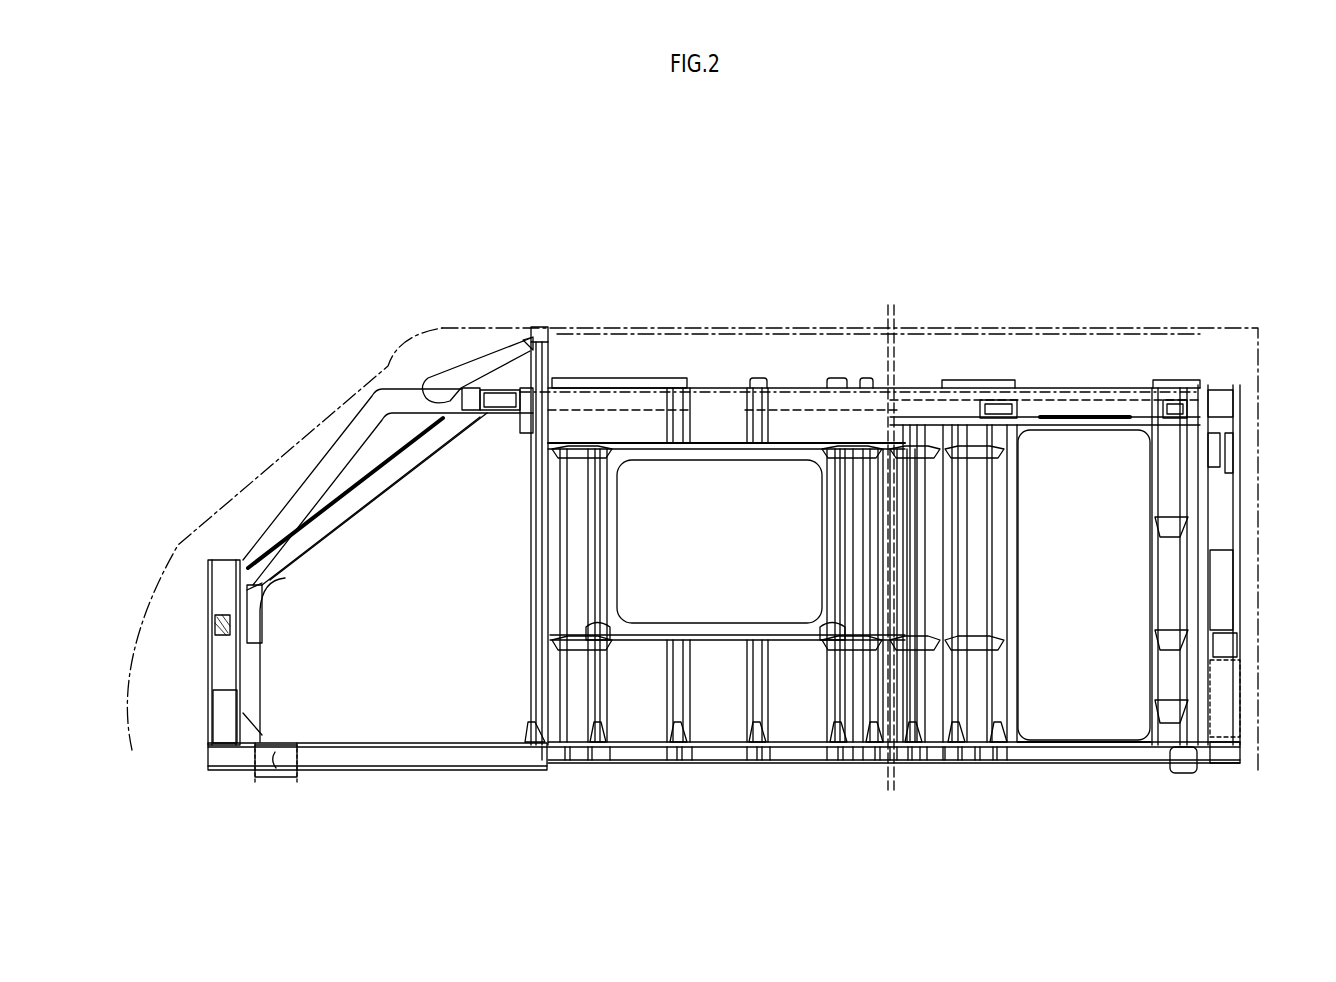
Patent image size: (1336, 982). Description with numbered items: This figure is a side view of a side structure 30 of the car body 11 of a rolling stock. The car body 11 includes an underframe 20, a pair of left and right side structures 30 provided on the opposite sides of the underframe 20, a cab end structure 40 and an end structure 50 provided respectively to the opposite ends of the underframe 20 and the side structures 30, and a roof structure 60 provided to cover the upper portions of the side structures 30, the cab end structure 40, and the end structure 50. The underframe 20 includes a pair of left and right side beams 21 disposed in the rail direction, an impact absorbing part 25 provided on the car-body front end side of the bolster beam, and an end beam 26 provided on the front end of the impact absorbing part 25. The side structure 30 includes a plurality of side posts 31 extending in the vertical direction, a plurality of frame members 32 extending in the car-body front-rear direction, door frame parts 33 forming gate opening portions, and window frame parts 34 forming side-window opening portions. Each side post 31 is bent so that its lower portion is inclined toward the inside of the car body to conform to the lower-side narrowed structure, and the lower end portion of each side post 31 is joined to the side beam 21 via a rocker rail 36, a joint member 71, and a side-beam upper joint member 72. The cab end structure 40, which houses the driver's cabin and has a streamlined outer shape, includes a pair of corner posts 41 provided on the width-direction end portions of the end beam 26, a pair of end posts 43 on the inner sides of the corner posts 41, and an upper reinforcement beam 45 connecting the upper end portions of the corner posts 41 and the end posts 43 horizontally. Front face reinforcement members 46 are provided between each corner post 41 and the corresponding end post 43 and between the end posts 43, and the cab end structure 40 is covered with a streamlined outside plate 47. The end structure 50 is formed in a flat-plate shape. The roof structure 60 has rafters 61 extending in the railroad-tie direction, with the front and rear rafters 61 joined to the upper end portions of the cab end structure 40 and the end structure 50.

The car body 11 is at (707, 256).
The underframe 20 is at (1129, 636).
The side beam 21 is at (1050, 742).
The impact absorbing part 25 is at (377, 789).
The end beam 26 is at (276, 789).
The side structure 30 is at (857, 564).
The side post 31 is at (752, 692).
The frame member 32 is at (557, 612).
The door frame part 33 is at (1110, 434).
The window frame part 34 is at (718, 462).
The rocker rail 36 is at (720, 765).
The cab end structure 40 is at (345, 536).
The corner post 41 is at (365, 522).
The end post 43 is at (300, 486).
The upper reinforcement beam 45 is at (528, 420).
The front face reinforcement member 46 is at (210, 668).
The outside plate 47 is at (152, 582).
The end structure 50 is at (1253, 446).
The roof structure 60 is at (1099, 316).
The rafter 61 is at (613, 331).
The joint member 71 is at (598, 765).
The side-beam upper joint member 72 is at (608, 727).